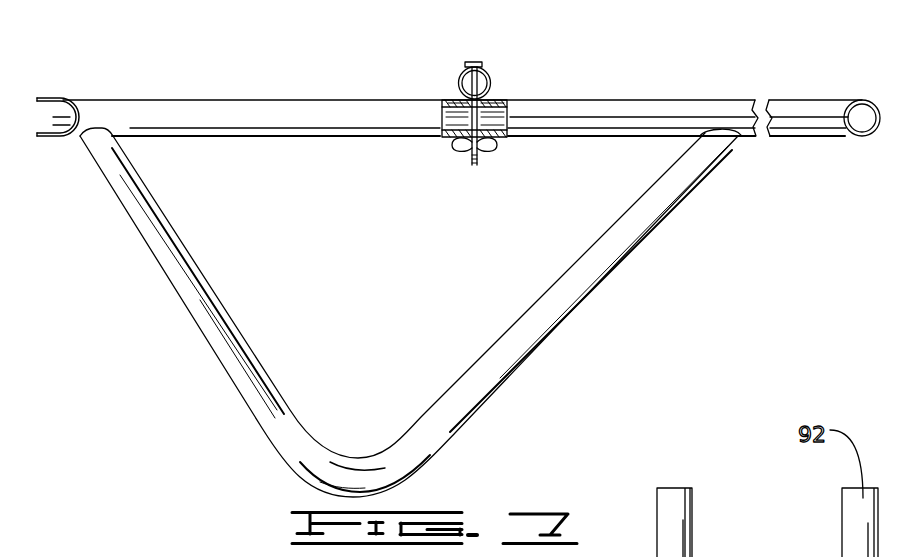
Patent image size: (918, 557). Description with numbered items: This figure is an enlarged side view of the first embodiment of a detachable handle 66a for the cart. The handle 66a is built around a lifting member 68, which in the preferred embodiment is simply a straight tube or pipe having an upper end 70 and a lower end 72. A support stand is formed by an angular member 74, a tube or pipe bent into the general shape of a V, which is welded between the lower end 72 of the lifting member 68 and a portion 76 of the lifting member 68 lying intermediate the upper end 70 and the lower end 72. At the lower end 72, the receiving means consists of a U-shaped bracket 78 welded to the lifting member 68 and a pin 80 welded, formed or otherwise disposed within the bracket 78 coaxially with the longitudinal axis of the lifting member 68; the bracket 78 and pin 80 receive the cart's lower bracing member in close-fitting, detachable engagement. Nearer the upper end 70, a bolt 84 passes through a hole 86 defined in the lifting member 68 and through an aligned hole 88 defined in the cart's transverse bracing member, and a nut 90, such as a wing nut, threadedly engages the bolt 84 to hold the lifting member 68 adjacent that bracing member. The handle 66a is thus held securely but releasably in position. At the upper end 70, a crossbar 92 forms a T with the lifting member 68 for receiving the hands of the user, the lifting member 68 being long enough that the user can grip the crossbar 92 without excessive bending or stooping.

The detachable handle 66a is at (461, 262).
The lifting member 68 is at (757, 101).
The upper end 70 is at (812, 101).
The lower end 72 is at (92, 108).
The angular member 74 is at (540, 320).
The portion of the lifting member 76 is at (743, 134).
The U-shaped bracket 78 is at (50, 96).
The pin 80 is at (53, 119).
The bolt 84 is at (474, 60).
The hole 86 is at (478, 100).
The hole 88 is at (450, 97).
The nut 90 is at (458, 148).
The crossbar 92 is at (862, 136).